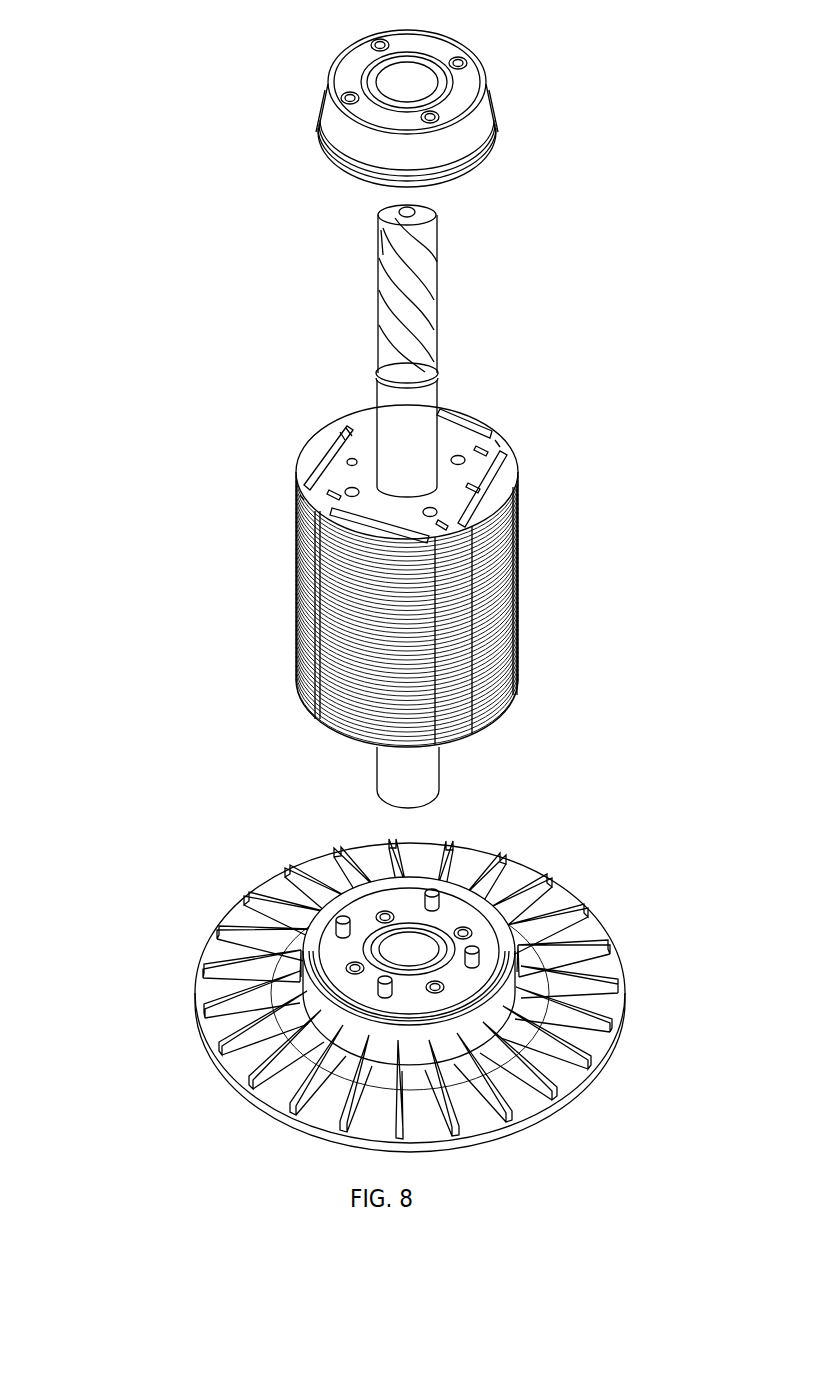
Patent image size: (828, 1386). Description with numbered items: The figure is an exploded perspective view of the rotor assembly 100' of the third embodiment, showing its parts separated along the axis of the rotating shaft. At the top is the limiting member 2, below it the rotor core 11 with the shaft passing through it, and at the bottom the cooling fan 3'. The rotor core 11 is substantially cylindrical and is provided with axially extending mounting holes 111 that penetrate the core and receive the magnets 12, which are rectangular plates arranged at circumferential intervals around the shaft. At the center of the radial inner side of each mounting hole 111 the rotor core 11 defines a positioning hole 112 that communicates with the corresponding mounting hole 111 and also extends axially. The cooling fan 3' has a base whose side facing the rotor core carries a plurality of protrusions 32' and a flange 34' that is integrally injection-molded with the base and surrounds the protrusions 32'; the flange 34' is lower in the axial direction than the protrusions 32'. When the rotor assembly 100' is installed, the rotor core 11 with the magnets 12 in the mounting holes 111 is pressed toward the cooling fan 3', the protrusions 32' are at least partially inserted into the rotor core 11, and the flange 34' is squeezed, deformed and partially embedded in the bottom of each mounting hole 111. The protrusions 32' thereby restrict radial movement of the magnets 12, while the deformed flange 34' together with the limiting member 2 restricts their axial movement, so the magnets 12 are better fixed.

The rotor assembly 100' is at (372, 591).
The limiting member 2 is at (338, 123).
The rotor core 11 is at (313, 660).
The magnets 12 is at (338, 437).
The mounting holes 111 is at (300, 495).
The positioning hole 112 is at (350, 462).
The cooling fan 3' is at (403, 995).
The protrusions 32' is at (279, 898).
The flange 34' is at (315, 971).